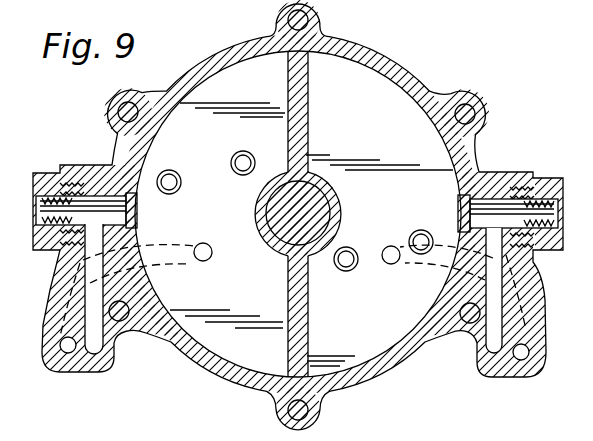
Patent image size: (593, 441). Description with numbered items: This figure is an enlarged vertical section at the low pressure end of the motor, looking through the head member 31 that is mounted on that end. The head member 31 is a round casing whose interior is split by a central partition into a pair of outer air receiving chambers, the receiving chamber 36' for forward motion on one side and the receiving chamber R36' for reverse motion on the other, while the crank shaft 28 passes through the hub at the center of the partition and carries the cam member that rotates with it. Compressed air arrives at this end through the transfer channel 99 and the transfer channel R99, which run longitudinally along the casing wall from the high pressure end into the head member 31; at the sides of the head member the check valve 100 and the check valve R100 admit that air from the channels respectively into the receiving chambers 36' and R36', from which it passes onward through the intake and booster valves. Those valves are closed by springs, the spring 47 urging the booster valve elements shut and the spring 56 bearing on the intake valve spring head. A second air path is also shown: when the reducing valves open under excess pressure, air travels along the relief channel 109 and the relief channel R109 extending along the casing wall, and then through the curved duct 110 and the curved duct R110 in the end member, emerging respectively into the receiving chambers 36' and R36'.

The head member 31 is at (404, 71).
The receiving chamber 36' is at (227, 203).
The receiving chamber R36' is at (379, 222).
The crank shaft 28 is at (282, 235).
The spring 47 is at (256, 150).
The spring 56 is at (176, 176).
The check valve 100 is at (138, 211).
The check valve R100 is at (457, 210).
The curved duct 110 is at (200, 261).
The curved duct R110 is at (393, 264).
The transfer channel 99 is at (100, 352).
The transfer channel R99 is at (492, 357).
The relief channel 109 is at (64, 352).
The relief channel R109 is at (523, 358).